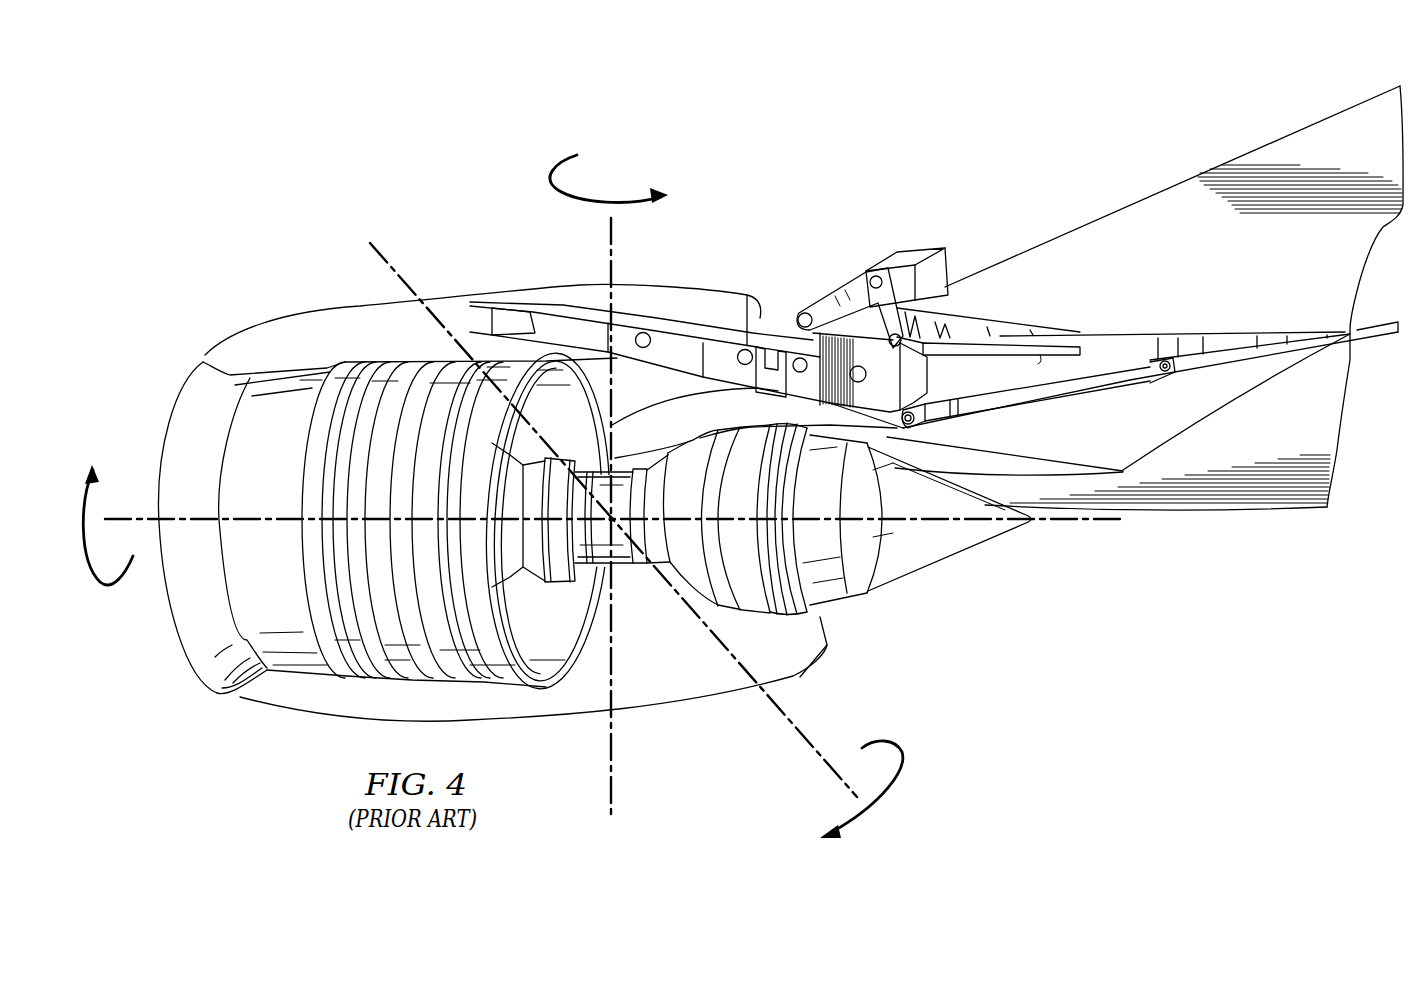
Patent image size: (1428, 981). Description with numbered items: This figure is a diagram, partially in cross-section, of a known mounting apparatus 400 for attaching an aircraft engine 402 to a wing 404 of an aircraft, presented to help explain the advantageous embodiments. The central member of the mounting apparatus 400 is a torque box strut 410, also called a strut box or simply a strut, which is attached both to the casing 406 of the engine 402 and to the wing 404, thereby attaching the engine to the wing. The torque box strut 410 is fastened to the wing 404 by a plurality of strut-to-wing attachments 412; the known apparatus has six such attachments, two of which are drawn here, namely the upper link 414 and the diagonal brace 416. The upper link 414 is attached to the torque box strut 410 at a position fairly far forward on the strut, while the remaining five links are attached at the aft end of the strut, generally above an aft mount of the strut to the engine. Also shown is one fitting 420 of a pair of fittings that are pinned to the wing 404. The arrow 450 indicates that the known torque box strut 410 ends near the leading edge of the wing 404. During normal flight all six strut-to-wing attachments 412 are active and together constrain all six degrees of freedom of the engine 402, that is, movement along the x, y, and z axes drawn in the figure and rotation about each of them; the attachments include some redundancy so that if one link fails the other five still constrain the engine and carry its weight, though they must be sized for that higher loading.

The mounting apparatus 400 is at (452, 97).
The aircraft engine 402 is at (651, 606).
The wing 404 is at (1285, 134).
The casing 406 is at (334, 303).
The torque box strut 410 is at (669, 324).
The strut-to-wing attachments 412 is at (866, 245).
The upper link 414 is at (843, 297).
The diagonal brace 416 is at (1095, 390).
The fitting 420 is at (890, 333).
The arrow 450 is at (938, 392).